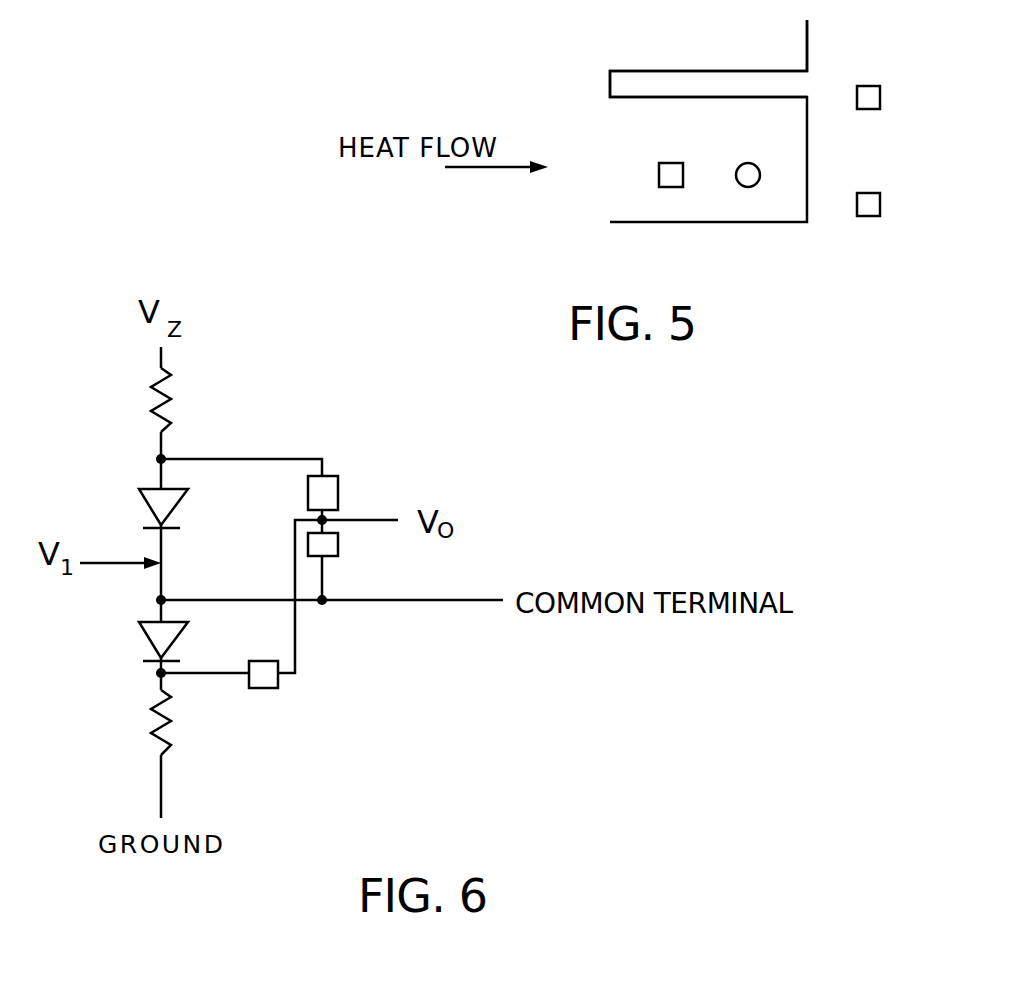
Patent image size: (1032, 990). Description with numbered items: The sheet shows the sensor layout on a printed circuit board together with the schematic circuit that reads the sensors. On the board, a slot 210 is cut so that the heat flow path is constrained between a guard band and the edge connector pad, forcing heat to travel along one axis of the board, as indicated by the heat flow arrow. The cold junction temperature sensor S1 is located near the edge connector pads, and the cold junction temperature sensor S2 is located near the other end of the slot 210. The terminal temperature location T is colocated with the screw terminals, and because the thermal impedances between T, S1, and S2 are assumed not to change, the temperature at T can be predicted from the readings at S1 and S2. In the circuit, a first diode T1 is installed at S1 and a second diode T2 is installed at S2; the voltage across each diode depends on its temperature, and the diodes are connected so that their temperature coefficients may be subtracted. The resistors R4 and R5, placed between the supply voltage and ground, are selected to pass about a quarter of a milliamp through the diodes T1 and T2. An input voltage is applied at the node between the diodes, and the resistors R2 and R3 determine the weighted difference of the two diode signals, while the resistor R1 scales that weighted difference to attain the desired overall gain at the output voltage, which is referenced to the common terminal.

In FIG. 5, the slot 210 is at (671, 84).
In FIG. 5, the cold junction temperature sensor S1 is at (747, 163).
In FIG. 5, the cold junction temperature sensor S2 is at (669, 162).
In FIG. 5, the terminal temperature location T is at (830, 118).
In FIG. 6, the resistor R1 is at (349, 549).
In FIG. 6, the resistor R2 is at (349, 493).
In FIG. 6, the resistor R3 is at (273, 700).
In FIG. 6, the resistor R4 is at (189, 400).
In FIG. 6, the resistor R5 is at (188, 722).
In FIG. 6, the first diode T1 is at (141, 503).
In FIG. 6, the second diode T2 is at (141, 635).